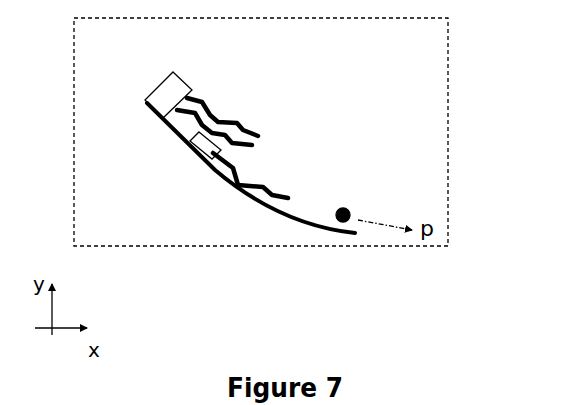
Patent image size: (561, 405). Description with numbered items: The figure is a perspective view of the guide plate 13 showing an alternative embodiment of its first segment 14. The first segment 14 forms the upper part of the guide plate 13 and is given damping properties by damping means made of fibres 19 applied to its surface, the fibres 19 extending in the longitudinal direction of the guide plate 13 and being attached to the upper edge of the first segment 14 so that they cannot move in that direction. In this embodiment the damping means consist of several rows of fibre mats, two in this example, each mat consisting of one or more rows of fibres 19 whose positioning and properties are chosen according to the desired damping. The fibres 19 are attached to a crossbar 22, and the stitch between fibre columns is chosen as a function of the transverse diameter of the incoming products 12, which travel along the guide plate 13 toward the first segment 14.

The incoming product 12 is at (348, 208).
The guide plate 13 is at (368, 248).
The first segment 14 is at (228, 177).
The fibres 19 is at (205, 102).
The crossbar 22 is at (162, 105).